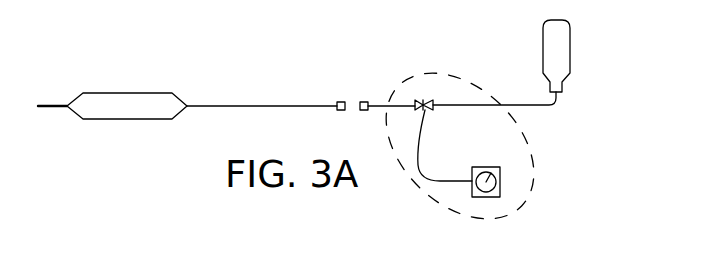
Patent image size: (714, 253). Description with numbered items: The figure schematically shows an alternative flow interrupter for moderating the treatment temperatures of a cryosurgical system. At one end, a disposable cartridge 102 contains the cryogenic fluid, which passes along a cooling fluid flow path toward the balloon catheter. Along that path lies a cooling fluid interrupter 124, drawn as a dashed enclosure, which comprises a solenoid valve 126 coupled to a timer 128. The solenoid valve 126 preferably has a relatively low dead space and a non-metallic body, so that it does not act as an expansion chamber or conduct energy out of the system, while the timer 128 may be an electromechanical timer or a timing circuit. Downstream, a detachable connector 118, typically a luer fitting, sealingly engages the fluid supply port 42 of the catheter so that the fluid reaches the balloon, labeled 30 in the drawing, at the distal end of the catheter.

The balloon catheter 30 is at (147, 92).
The fluid supply port 42 is at (340, 100).
The detachable connector 118 is at (358, 100).
The solenoid valve 126 is at (430, 101).
The disposable cartridge 102 is at (562, 57).
The cooling fluid interrupter 124 is at (535, 160).
The timer 128 is at (500, 191).